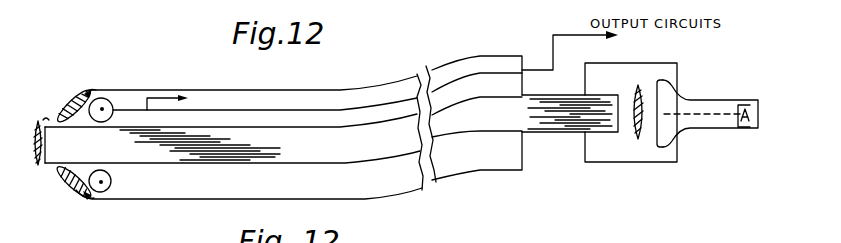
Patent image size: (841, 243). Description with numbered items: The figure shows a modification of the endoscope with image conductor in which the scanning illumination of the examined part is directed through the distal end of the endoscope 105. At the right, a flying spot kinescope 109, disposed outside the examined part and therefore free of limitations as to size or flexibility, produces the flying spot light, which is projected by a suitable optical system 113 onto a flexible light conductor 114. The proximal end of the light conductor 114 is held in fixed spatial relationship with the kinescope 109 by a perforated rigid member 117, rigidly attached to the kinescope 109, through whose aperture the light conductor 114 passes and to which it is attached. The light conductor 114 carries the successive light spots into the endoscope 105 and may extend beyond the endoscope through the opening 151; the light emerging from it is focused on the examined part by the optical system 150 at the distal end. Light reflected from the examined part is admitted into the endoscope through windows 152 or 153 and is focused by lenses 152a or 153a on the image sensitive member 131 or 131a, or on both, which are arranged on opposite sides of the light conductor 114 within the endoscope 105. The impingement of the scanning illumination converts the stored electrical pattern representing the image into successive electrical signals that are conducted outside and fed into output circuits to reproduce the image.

The endoscope 105 is at (359, 104).
The image sensitive member 131 is at (113, 101).
The image sensitive member 131a is at (113, 178).
The optical system 150 is at (43, 166).
The opening 151 is at (55, 126).
The window 152 is at (82, 97).
The lens 152a is at (90, 91).
The window 153 is at (74, 192).
The lens 153a is at (88, 197).
The light conductor 114 is at (551, 128).
The optical system 113 is at (638, 153).
The perforated rigid member 117 is at (670, 70).
The kinescope 109 is at (707, 103).